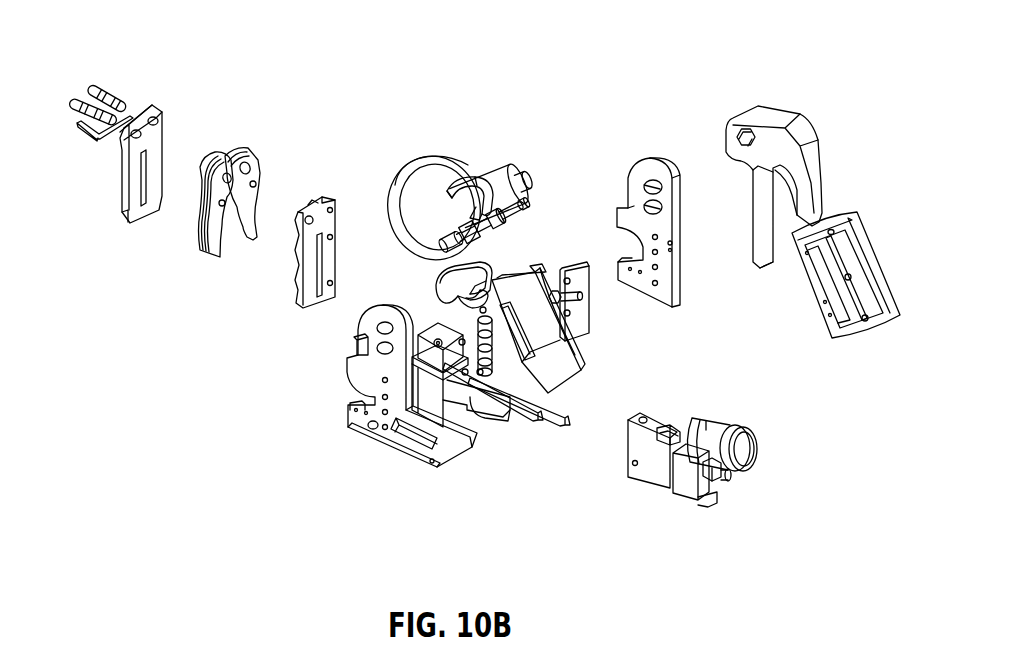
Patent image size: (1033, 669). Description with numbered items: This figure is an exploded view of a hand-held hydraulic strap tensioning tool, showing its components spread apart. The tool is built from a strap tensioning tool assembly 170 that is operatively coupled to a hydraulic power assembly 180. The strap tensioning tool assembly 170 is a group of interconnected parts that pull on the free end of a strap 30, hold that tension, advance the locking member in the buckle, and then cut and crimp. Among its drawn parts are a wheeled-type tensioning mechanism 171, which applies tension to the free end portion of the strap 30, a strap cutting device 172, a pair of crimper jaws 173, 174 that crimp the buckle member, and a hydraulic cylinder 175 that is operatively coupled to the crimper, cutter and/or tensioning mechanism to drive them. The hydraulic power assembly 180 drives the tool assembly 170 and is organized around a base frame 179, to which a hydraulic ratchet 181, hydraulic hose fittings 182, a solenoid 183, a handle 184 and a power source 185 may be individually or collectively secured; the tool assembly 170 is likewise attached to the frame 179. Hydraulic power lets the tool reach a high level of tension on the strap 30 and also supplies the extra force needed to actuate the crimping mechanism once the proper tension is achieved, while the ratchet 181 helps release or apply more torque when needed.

The strap 30 is at (447, 158).
The strap tensioning tool assembly 170 is at (520, 465).
The wheeled-type tensioning mechanism 171 is at (430, 177).
The strap cutting device 172 is at (368, 333).
The crimper jaw 173 is at (164, 206).
The crimper jaw 174 is at (200, 227).
The hydraulic cylinder 175 is at (410, 437).
The base frame 179 is at (680, 287).
The hydraulic power assembly 180 is at (843, 70).
The hydraulic ratchet 181 is at (807, 130).
The hydraulic hose fittings 182 is at (760, 452).
The solenoid 183 is at (660, 465).
The handle 184 is at (886, 260).
The power source 185 is at (543, 272).